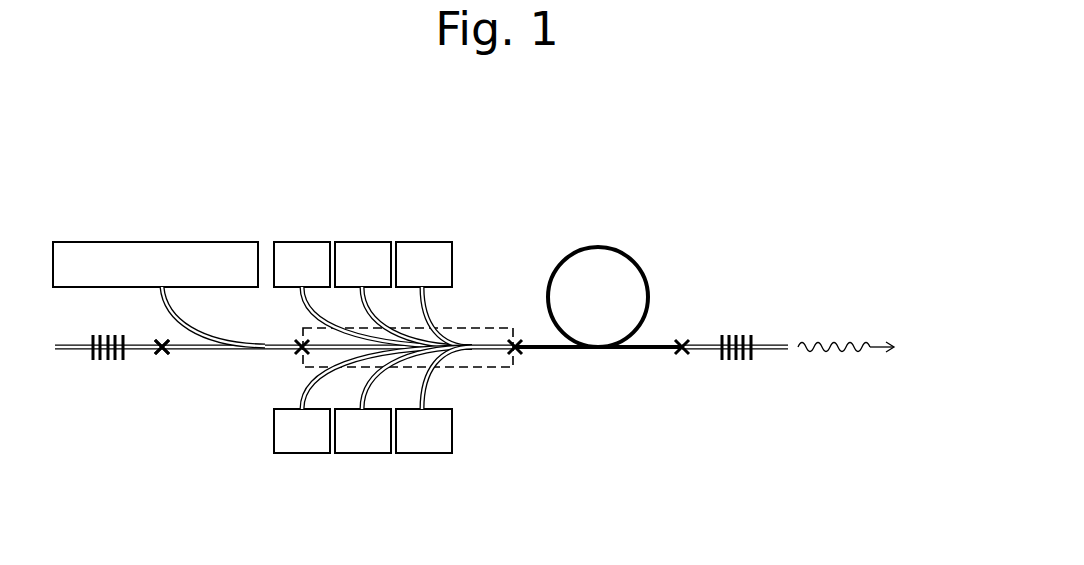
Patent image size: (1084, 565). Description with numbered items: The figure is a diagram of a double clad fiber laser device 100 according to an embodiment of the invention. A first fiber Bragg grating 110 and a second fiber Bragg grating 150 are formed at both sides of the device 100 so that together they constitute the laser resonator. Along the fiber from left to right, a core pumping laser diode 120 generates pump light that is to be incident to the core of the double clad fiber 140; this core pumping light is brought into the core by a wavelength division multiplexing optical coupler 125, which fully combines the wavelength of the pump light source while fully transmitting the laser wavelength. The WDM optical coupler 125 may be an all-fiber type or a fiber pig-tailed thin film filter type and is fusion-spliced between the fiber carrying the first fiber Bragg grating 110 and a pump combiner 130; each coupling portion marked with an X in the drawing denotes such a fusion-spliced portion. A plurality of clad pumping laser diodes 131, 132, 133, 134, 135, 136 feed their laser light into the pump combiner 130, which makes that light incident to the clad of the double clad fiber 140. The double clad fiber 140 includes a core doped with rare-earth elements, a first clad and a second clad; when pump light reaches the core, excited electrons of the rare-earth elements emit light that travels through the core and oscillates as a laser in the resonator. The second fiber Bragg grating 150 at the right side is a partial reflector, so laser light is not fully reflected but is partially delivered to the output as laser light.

The double clad fiber laser device 100 is at (762, 172).
The first fiber Bragg grating 110 is at (106, 379).
The core pumping laser diode 120 is at (192, 242).
The wavelength division multiplexing optical coupler 125 is at (218, 396).
The pump combiner 130 is at (488, 368).
The clad pumping laser diode 131 is at (302, 242).
The clad pumping laser diode 132 is at (362, 242).
The clad pumping laser diode 133 is at (421, 242).
The clad pumping laser diode 134 is at (302, 453).
The clad pumping laser diode 135 is at (362, 453).
The clad pumping laser diode 136 is at (422, 453).
The double clad fiber 140 is at (642, 260).
The second fiber Bragg grating 150 is at (734, 378).